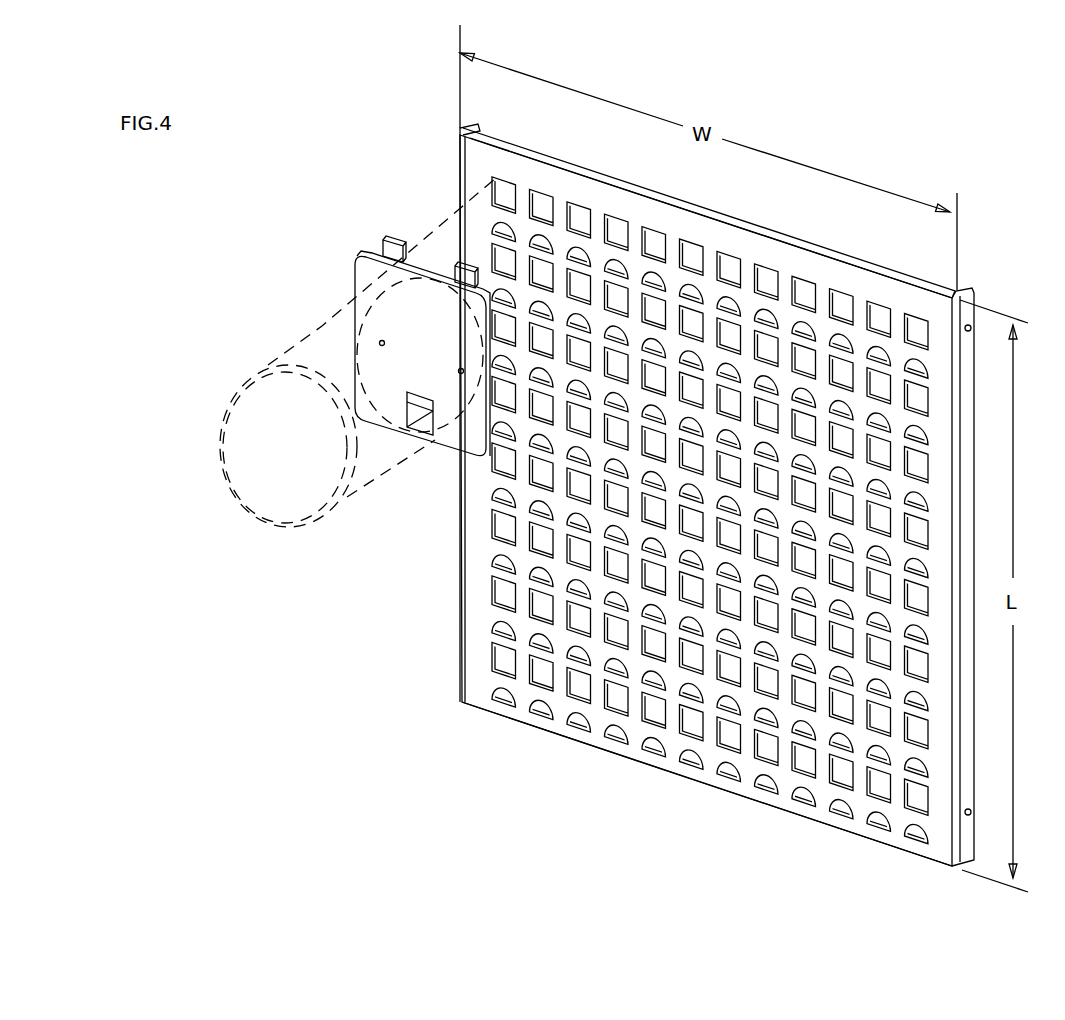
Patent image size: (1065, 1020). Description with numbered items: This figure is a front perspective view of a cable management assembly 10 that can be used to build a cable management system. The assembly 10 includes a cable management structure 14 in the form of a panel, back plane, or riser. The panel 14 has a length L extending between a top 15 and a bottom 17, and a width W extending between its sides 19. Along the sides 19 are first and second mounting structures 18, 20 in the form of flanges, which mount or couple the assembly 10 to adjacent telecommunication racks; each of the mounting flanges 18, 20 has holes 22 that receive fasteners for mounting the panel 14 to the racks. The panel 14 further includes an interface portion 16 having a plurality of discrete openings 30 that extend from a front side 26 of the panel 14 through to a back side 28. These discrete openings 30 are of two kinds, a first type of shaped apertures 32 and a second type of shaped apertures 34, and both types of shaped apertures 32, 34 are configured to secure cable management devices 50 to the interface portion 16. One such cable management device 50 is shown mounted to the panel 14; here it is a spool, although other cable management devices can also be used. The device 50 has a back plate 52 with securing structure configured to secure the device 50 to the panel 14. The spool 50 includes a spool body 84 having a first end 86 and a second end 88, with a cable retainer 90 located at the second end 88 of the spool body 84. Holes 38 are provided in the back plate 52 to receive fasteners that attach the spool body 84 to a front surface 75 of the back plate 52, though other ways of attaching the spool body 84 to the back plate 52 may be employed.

The cable management assembly 10 is at (337, 698).
The cable management structure 14 is at (812, 249).
The top 15 is at (866, 268).
The interface portion 16 is at (754, 798).
The bottom 17 is at (523, 722).
The first mounting structure 18 is at (974, 296).
The sides 19 is at (458, 626).
The second mounting structure 20 is at (477, 131).
The holes 22 is at (971, 327).
The front side 26 is at (606, 750).
The back side 28 is at (738, 218).
The discrete openings 30 is at (723, 300).
The first type of shaped apertures 32 is at (578, 214).
The second type of shaped apertures 34 is at (918, 695).
The holes 38 is at (460, 370).
The cable management device 50 is at (240, 332).
The back plate 52 is at (371, 256).
The front surface 75 is at (467, 448).
The spool body 84 is at (321, 318).
The first end 86 is at (368, 298).
The second end 88 is at (350, 494).
The cable retainer 90 is at (352, 449).